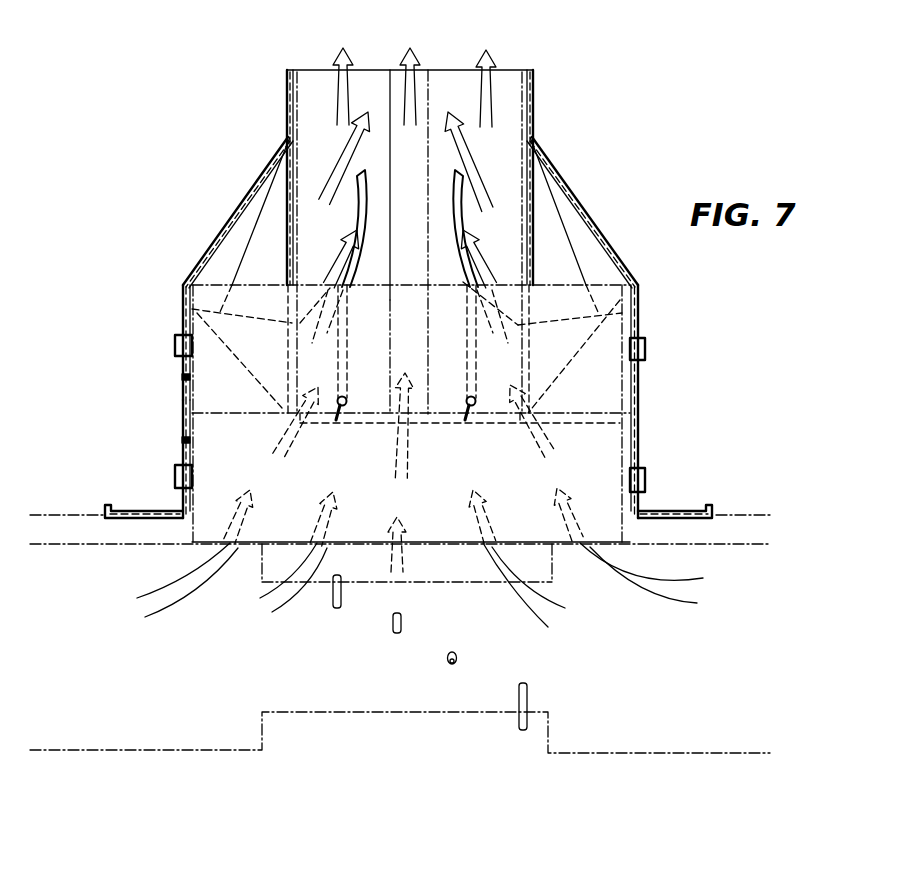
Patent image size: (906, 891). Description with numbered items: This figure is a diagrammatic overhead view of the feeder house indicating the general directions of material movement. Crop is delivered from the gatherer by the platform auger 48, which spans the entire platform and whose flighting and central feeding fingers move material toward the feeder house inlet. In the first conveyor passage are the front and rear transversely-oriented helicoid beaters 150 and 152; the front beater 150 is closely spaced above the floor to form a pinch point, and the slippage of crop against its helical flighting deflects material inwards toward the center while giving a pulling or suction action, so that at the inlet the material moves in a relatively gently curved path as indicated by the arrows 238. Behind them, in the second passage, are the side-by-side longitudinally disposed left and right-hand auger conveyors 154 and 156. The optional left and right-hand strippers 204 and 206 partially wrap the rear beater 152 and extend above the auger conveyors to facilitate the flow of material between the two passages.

The right-hand auger conveyor 156 is at (312, 112).
The left-hand auger conveyor 154 is at (508, 116).
The rear helicoid beater 152 is at (181, 377).
The front helicoid beater 150 is at (181, 440).
The right-hand stripper 206 is at (340, 405).
The left-hand stripper 204 is at (469, 405).
The arrows 238 is at (173, 600).
The platform auger 48 is at (423, 716).